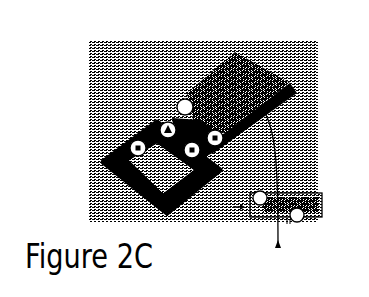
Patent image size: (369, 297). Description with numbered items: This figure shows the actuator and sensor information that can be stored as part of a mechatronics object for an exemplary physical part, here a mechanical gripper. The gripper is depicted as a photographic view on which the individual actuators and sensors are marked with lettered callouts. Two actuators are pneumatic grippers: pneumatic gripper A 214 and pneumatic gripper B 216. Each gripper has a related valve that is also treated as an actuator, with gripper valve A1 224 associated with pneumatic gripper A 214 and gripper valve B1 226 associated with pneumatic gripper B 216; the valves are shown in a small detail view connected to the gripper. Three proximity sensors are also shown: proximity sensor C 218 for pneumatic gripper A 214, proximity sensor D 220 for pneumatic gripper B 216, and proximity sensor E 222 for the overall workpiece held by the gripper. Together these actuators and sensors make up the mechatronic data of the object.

The pneumatic gripper A 214 is at (160, 125).
The pneumatic gripper B 216 is at (194, 159).
The proximity sensor C 218 is at (179, 101).
The proximity sensor D 220 is at (219, 130).
The proximity sensor E 222 is at (131, 146).
The gripper valve A1 224 is at (254, 205).
The gripper valve B1 226 is at (300, 223).